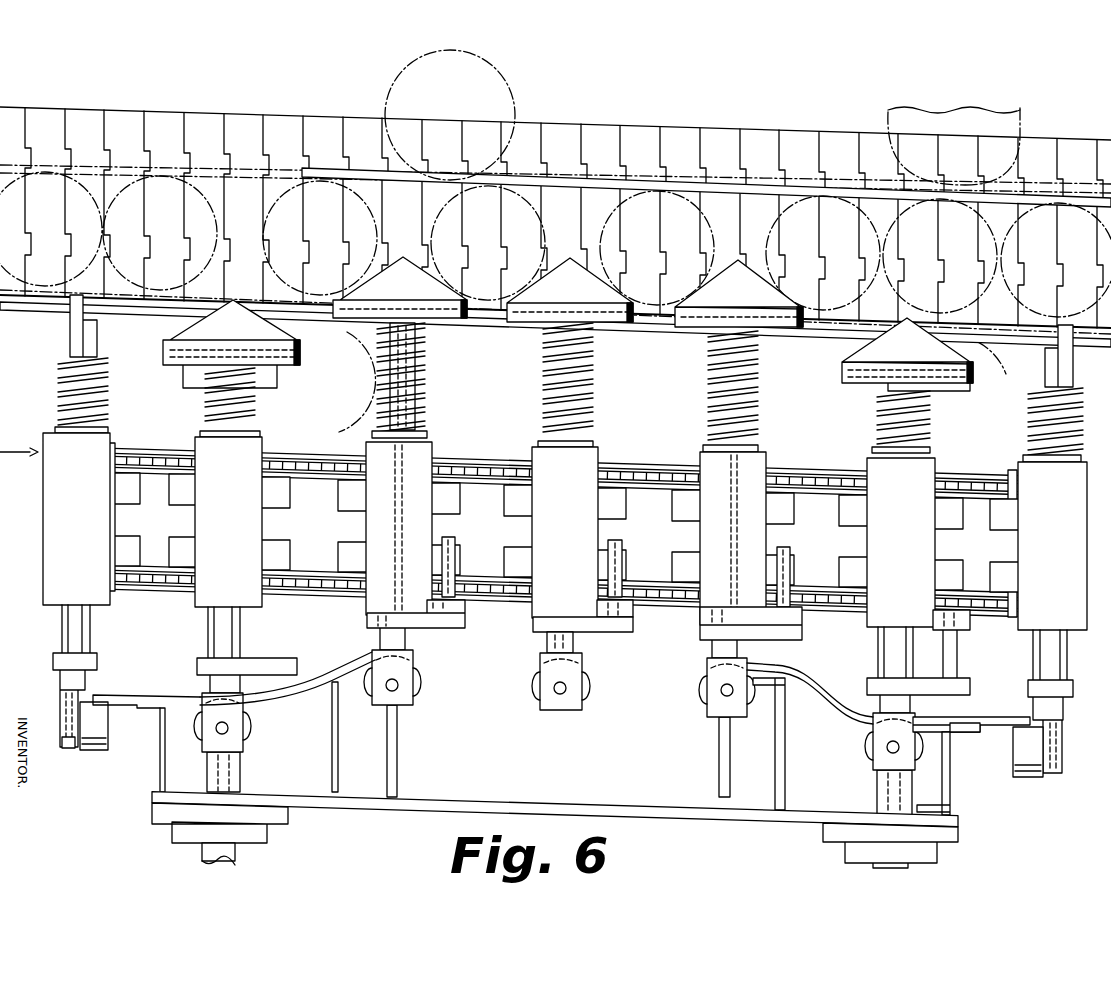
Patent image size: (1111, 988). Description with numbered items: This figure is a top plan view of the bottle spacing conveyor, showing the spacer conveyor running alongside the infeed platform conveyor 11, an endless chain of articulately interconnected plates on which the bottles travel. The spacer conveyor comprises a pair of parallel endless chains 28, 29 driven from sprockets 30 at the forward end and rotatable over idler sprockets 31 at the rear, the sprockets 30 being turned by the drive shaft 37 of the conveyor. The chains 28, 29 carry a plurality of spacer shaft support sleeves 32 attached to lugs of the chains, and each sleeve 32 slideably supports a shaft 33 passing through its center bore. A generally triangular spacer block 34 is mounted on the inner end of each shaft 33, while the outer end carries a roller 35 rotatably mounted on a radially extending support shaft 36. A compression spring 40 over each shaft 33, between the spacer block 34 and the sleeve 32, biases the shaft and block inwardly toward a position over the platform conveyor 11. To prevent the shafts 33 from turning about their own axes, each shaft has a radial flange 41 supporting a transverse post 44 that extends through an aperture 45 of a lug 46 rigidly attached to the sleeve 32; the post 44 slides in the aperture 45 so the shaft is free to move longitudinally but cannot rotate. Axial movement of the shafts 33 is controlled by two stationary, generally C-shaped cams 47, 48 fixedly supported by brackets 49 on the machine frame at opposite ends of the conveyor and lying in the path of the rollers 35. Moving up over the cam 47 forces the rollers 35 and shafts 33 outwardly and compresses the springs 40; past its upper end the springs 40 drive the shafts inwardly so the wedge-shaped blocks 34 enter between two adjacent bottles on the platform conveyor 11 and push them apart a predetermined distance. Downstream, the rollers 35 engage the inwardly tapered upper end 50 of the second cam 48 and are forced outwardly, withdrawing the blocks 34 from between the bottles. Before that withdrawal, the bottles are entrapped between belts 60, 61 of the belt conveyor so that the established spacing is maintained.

The infeed platform conveyor 11 is at (680, 128).
The belt 61 is at (1025, 113).
The spacer block 34 is at (568, 324).
The belt 60 is at (997, 344).
The shaft 33 is at (592, 395).
The compression spring 40 is at (595, 424).
The endless chain 29 is at (508, 460).
The endless chain 28 is at (503, 577).
The sprocket 30 is at (285, 535).
The spacer shaft support sleeve 32 is at (566, 533).
The idler sprocket 31 is at (959, 560).
The transverse post 44 is at (622, 545).
The lug 46 is at (597, 605).
The aperture 45 is at (633, 610).
The flange 41 is at (618, 630).
The inwardly tapered upper end 50 is at (415, 663).
The roller 35 is at (582, 665).
The support shaft 36 is at (567, 702).
The cam 48 is at (290, 702).
The cam 47 is at (980, 710).
The bracket 49 is at (160, 772).
The drive shaft 37 is at (240, 852).